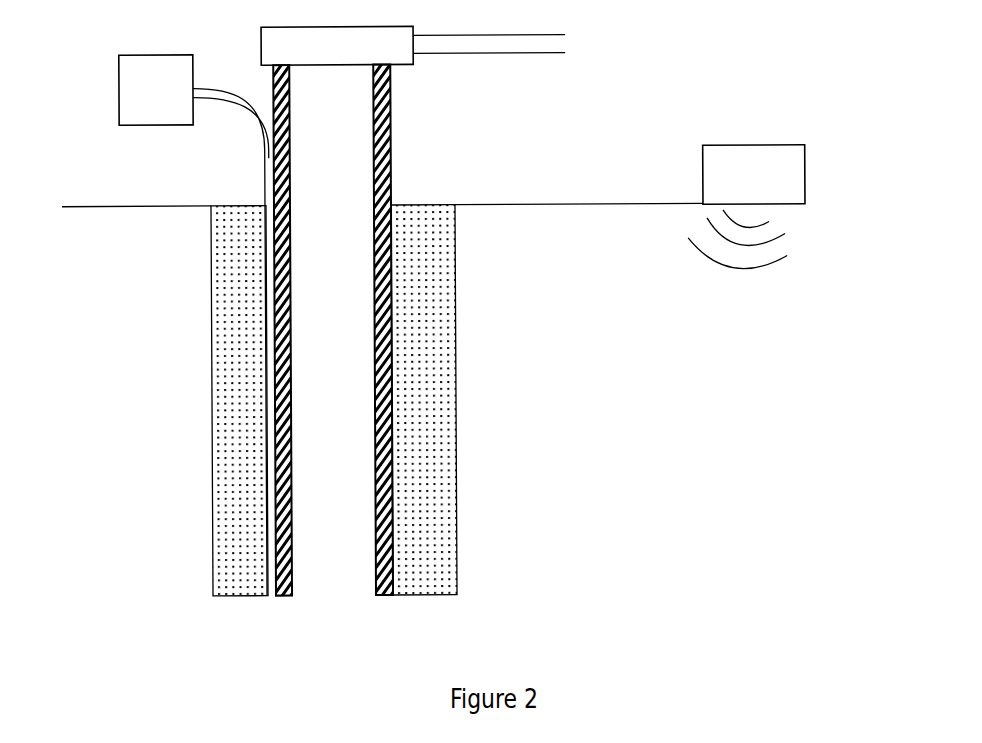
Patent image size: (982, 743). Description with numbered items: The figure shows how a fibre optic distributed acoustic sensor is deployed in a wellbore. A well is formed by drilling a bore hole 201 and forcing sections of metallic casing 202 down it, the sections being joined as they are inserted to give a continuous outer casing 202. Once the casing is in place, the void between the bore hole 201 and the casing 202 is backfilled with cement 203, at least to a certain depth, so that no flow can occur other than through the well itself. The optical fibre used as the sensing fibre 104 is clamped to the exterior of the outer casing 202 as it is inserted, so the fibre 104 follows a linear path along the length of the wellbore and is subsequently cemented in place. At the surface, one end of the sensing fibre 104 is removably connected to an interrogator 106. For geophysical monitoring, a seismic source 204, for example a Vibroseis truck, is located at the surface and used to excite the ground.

The sensing fibre 104 is at (267, 373).
The interrogator 106 is at (141, 85).
The bore hole 201 is at (457, 386).
The casing 202 is at (392, 324).
The cement 203 is at (435, 472).
The seismic source 204 is at (720, 180).